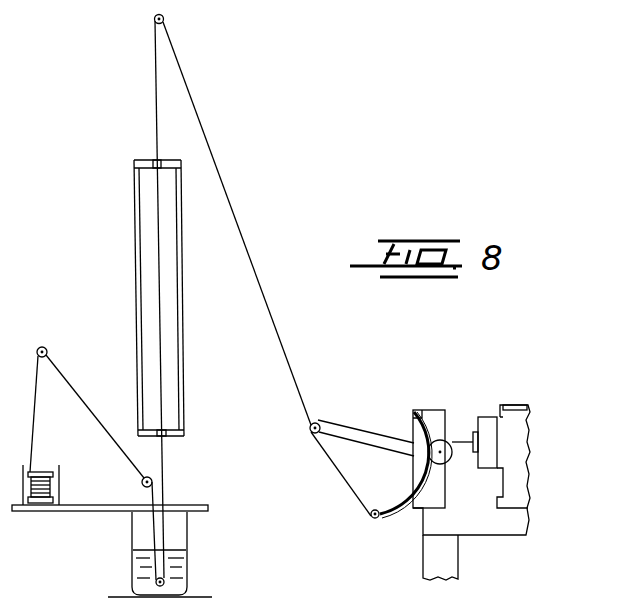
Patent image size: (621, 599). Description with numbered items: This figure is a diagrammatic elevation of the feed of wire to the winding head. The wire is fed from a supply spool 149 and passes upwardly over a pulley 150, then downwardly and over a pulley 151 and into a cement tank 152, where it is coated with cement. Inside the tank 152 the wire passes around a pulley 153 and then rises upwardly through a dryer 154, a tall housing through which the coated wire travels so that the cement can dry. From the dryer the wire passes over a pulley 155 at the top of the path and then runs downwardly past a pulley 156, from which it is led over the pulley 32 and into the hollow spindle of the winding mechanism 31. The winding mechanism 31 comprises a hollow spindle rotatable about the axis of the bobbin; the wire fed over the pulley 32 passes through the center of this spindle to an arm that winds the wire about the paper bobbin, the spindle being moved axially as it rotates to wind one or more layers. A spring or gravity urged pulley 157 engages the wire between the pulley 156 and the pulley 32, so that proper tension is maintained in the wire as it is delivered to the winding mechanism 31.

The winding mechanism 31 is at (533, 395).
The pulley 32 is at (442, 450).
The supply spool 149 is at (37, 472).
The pulley 150 is at (45, 346).
The pulley 151 is at (142, 483).
The cement tank 152 is at (180, 557).
The pulley 153 is at (164, 580).
The dryer 154 is at (183, 333).
The pulley 155 is at (164, 19).
The pulley 156 is at (322, 420).
The spring or gravity urged pulley 157 is at (373, 518).